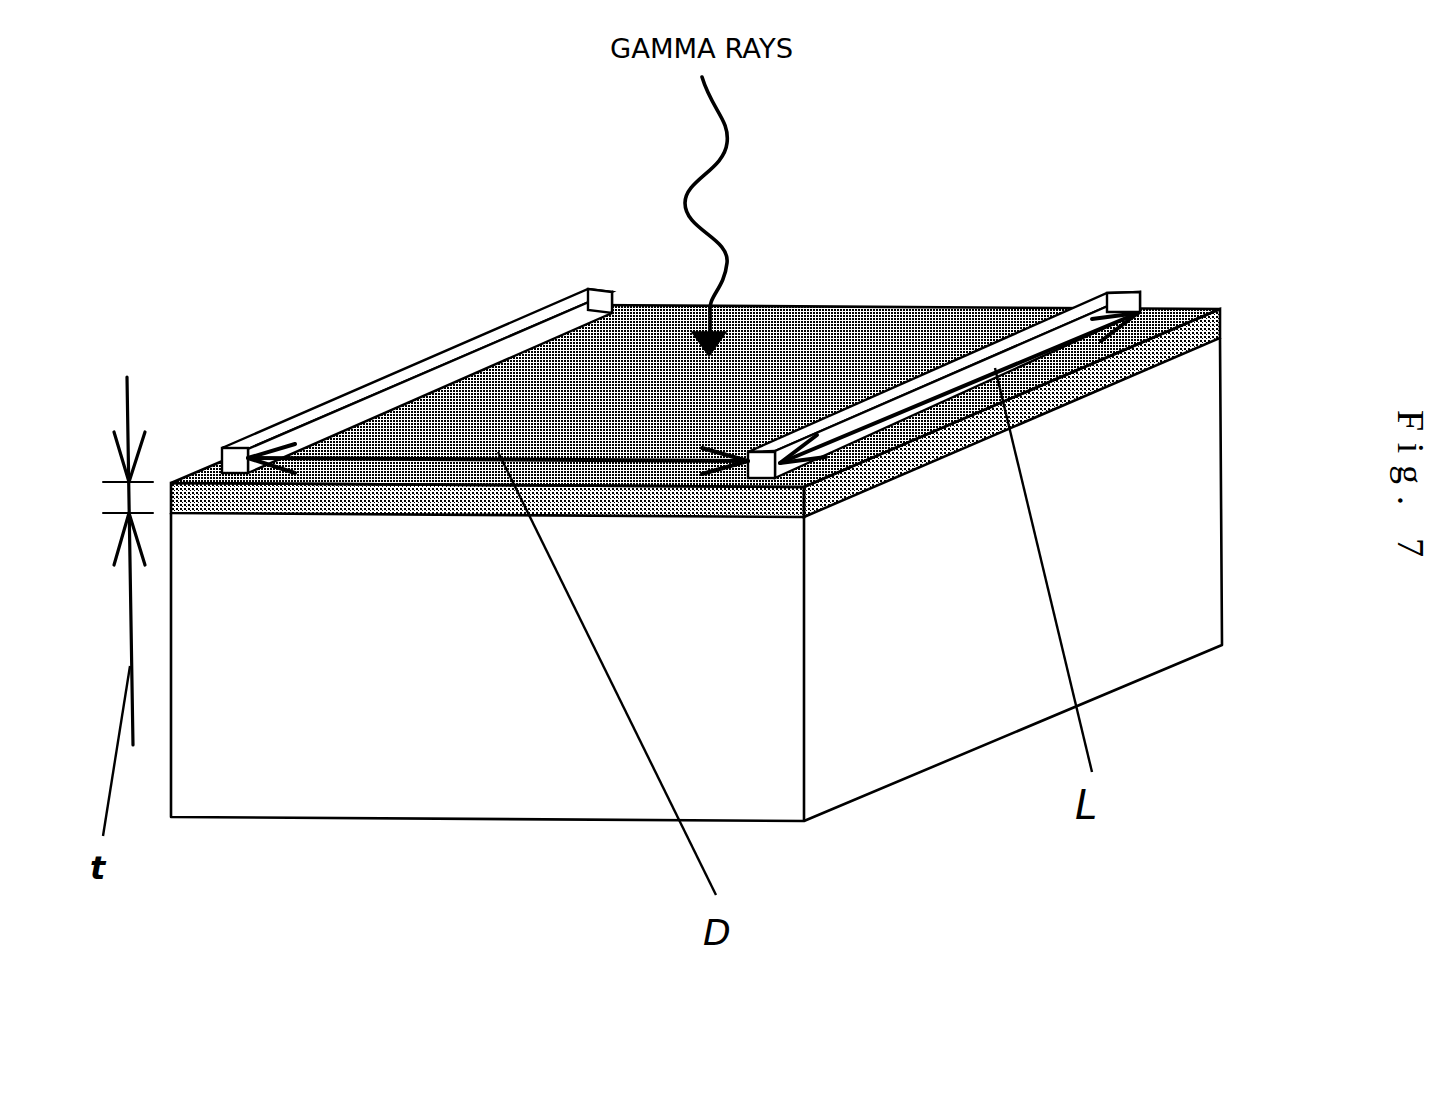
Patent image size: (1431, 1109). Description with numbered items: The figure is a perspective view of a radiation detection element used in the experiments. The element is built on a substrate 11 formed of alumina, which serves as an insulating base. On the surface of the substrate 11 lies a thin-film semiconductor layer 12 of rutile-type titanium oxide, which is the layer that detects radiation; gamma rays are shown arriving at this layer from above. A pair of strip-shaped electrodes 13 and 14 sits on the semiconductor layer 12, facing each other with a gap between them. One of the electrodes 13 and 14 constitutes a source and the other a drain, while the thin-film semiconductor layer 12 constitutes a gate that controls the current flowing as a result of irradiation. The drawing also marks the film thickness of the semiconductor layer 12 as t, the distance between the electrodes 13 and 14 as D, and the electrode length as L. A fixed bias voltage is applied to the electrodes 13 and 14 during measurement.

The substrate 11 is at (1193, 545).
The thin-film semiconductor layer 12 is at (787, 347).
The strip-shaped electrode 13 is at (480, 342).
The strip-shaped electrode 14 is at (948, 367).